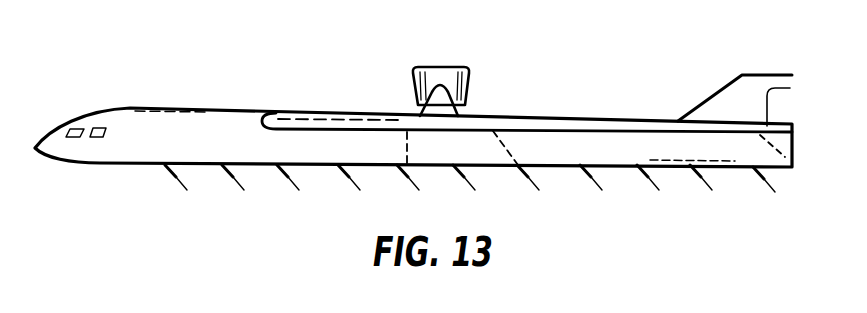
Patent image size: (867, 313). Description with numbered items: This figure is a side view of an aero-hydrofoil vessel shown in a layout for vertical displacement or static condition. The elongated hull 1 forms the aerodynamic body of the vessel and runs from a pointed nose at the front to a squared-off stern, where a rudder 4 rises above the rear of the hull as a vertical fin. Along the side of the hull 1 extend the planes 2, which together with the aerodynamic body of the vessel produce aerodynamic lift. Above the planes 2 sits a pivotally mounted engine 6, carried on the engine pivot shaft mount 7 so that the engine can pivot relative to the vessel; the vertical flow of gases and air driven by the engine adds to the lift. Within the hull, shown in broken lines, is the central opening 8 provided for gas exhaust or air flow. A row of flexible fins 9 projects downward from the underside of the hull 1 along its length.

The hull 1 is at (96, 163).
The planes 2 is at (612, 121).
The rudder 4 is at (796, 112).
The pivotally mounted engine 6 is at (470, 80).
The engine pivot shaft mount 7 is at (418, 110).
The central opening 8 is at (494, 150).
The flexible fins 9 is at (175, 178).